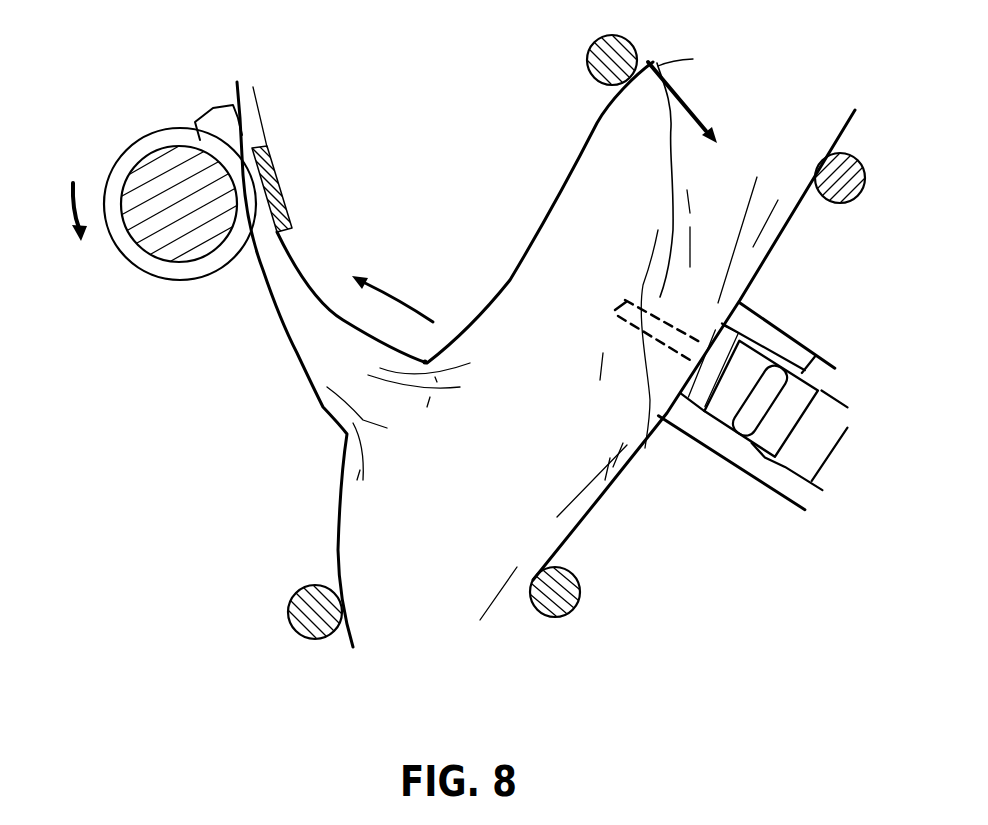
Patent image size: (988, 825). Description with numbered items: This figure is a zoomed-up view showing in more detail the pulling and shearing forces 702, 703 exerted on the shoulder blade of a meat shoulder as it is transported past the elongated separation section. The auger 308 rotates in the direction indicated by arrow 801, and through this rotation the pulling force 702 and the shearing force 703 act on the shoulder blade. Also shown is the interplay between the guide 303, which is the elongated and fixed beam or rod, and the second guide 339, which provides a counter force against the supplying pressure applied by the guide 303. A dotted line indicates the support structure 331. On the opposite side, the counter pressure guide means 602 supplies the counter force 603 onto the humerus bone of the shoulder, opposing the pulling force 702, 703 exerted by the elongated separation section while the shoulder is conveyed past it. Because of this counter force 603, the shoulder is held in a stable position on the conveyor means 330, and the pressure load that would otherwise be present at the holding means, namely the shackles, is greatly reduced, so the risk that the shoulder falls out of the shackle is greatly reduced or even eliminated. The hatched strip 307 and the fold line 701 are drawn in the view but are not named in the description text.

The arrow 801 is at (72, 183).
The auger 308 is at (163, 154).
The pad 307 is at (272, 157).
The pulling force 702 is at (362, 277).
The shearing force 703 is at (408, 262).
The counter pressure guide means 602 is at (587, 53).
The counter force 603 is at (670, 123).
The support structure 331 is at (653, 330).
The fold 701 is at (330, 357).
The conveyor means 330 is at (726, 494).
The guide 303 is at (312, 640).
The second guide 339 is at (565, 617).